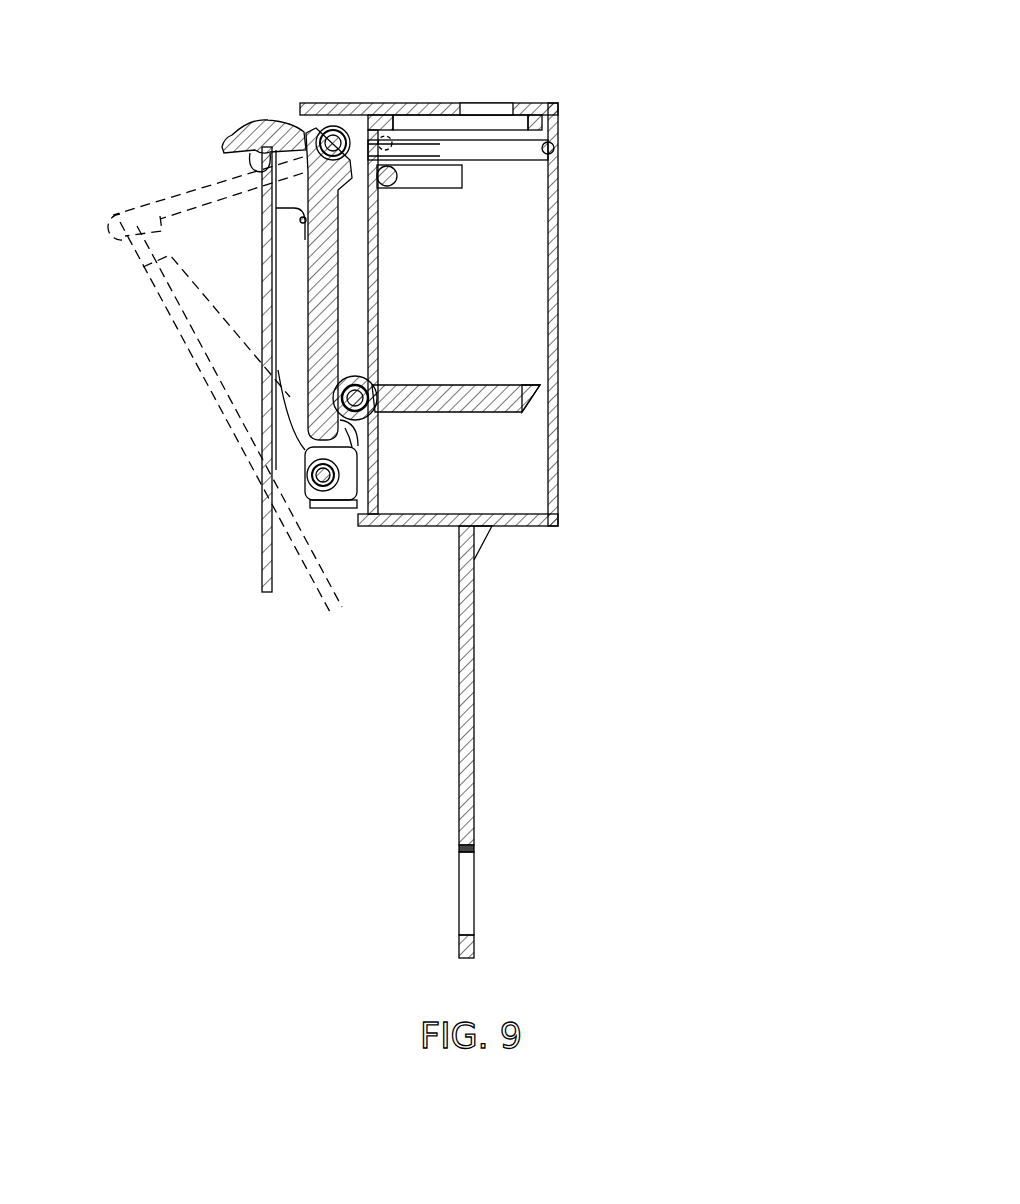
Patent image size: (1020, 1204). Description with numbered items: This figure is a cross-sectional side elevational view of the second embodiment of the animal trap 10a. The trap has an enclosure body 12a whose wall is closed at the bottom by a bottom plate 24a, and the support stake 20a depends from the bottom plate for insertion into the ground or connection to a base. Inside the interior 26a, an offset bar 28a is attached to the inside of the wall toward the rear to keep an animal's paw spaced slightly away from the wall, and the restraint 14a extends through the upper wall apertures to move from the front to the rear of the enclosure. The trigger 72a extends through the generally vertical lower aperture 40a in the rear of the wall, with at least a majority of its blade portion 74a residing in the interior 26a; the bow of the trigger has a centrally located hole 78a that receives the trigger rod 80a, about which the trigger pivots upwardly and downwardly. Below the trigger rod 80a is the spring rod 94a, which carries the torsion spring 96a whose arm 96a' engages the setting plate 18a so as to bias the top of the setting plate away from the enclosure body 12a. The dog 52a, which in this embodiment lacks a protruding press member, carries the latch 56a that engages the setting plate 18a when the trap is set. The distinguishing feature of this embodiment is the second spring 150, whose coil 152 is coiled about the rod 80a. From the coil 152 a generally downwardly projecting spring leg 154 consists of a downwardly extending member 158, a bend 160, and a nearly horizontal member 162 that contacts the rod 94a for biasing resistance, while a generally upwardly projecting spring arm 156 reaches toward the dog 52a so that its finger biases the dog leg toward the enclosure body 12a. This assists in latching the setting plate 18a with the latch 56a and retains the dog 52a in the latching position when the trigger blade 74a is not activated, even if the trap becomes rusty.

The animal trap 10a is at (561, 314).
The enclosure body 12a is at (562, 239).
The restraint 14a is at (485, 150).
The setting plate 18a is at (264, 601).
The support stake 20a is at (466, 900).
The bottom plate 24a is at (410, 520).
The interior 26a is at (513, 226).
The offset bar 28a is at (465, 175).
The lower aperture 40a is at (382, 347).
The dog 52a is at (236, 118).
The latch 56a is at (227, 138).
The trigger 72a is at (463, 418).
The blade portion 74a is at (500, 398).
The hole 78a is at (335, 400).
The trigger rod 80a is at (382, 350).
The spring rod 94a is at (343, 480).
The torsion spring 96a is at (237, 444).
The arm 96a' is at (171, 277).
The second spring 150 is at (373, 381).
The coil 152 is at (367, 420).
The spring leg 154 is at (332, 507).
The spring arm 156 is at (340, 333).
The downwardly extending member 158 is at (343, 480).
The bend 160 is at (340, 508).
The nearly horizontal member 162 is at (305, 505).